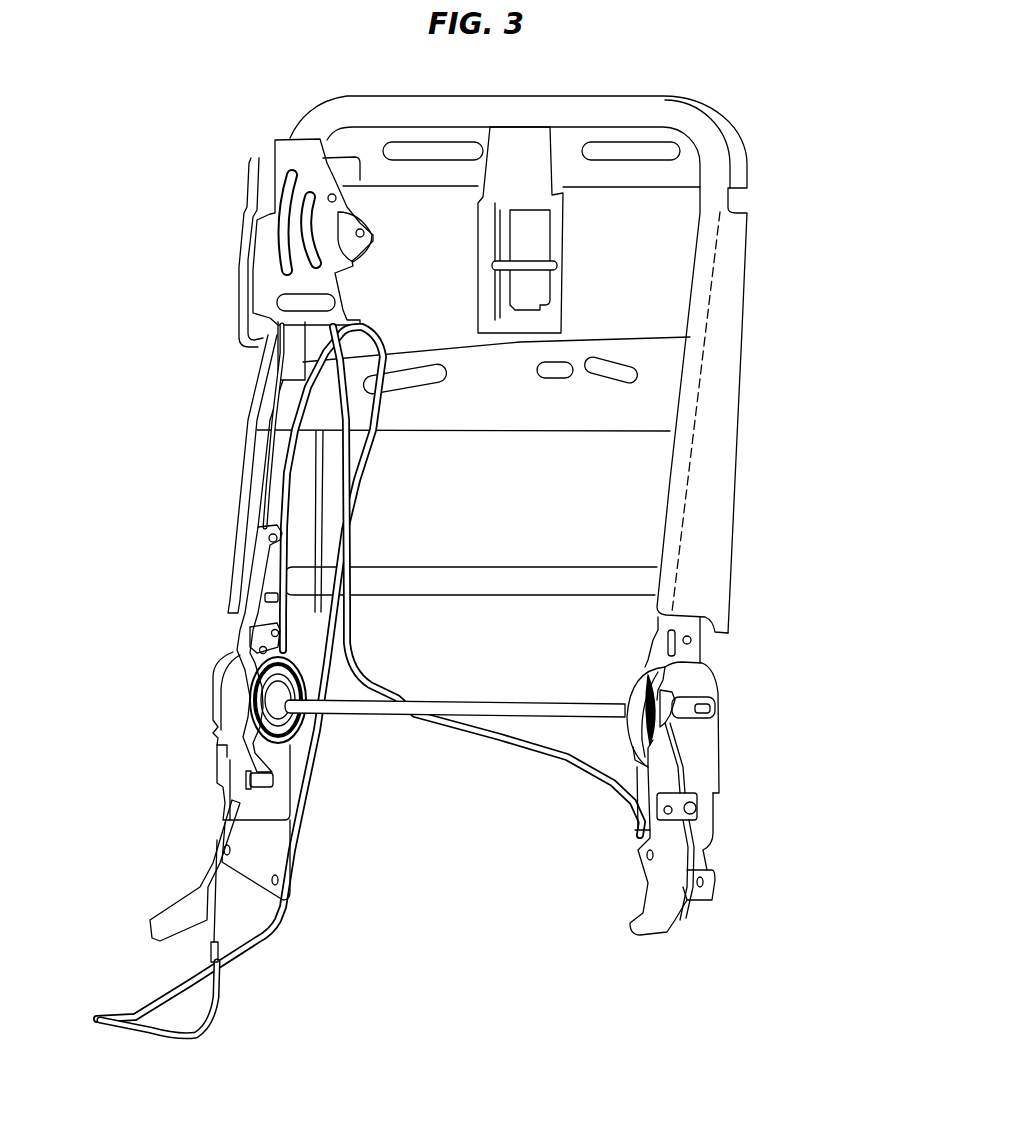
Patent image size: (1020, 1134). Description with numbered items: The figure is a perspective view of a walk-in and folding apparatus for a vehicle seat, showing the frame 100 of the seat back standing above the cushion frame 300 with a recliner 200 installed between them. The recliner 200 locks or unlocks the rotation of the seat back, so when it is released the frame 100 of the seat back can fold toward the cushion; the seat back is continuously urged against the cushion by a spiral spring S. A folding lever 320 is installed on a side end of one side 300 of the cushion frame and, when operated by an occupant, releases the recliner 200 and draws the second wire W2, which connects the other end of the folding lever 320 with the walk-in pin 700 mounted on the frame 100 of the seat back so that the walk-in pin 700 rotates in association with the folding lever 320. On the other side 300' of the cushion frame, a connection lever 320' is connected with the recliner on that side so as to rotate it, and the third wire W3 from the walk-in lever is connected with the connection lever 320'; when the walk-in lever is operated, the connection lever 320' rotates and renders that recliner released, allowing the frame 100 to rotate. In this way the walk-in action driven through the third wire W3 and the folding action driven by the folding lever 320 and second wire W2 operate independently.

The frame of the seat back 100 is at (762, 314).
The recliner 200 is at (227, 705).
The cushion frame 300 is at (345, 822).
The another side of the cushion frame 300' is at (762, 776).
The folding lever 320 is at (134, 861).
The connection lever 320' is at (775, 717).
The walk-in pin 700 is at (250, 650).
The spiral spring S is at (723, 690).
The second wire W2 is at (243, 960).
The third wire W3 is at (590, 768).